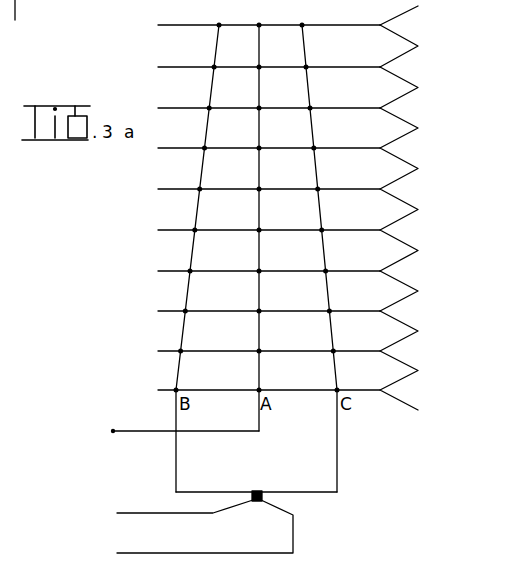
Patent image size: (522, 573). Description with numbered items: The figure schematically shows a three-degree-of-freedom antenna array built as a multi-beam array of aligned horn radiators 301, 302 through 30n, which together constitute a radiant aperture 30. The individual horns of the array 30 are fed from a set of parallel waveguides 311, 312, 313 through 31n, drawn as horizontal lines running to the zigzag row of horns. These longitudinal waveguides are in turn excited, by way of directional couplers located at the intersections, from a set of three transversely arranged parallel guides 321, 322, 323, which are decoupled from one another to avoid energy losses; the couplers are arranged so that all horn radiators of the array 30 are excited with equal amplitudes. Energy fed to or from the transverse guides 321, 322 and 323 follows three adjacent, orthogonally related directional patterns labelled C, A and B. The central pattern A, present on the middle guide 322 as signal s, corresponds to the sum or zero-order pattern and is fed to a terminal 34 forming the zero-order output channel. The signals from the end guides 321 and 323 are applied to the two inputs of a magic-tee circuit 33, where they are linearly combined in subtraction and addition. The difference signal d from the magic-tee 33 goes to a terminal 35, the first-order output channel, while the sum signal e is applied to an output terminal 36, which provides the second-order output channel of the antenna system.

The radiant aperture 30 is at (424, 230).
The horn radiator 301 is at (407, 42).
The horn radiator 302 is at (407, 82).
The horn radiator 30n is at (407, 286).
The parallel waveguide 311 is at (269, 16).
The parallel waveguide 312 is at (269, 57).
The parallel waveguide 313 is at (269, 99).
The parallel waveguide 31n is at (269, 260).
The transverse parallel guide 321 is at (306, 258).
The middle transverse guide 322 is at (241, 228).
The transverse parallel guide 323 is at (193, 258).
The magic-tee circuit 33 is at (256, 486).
The terminal 34 is at (171, 426).
The terminal 35 is at (171, 507).
The output terminal 36 is at (191, 531).